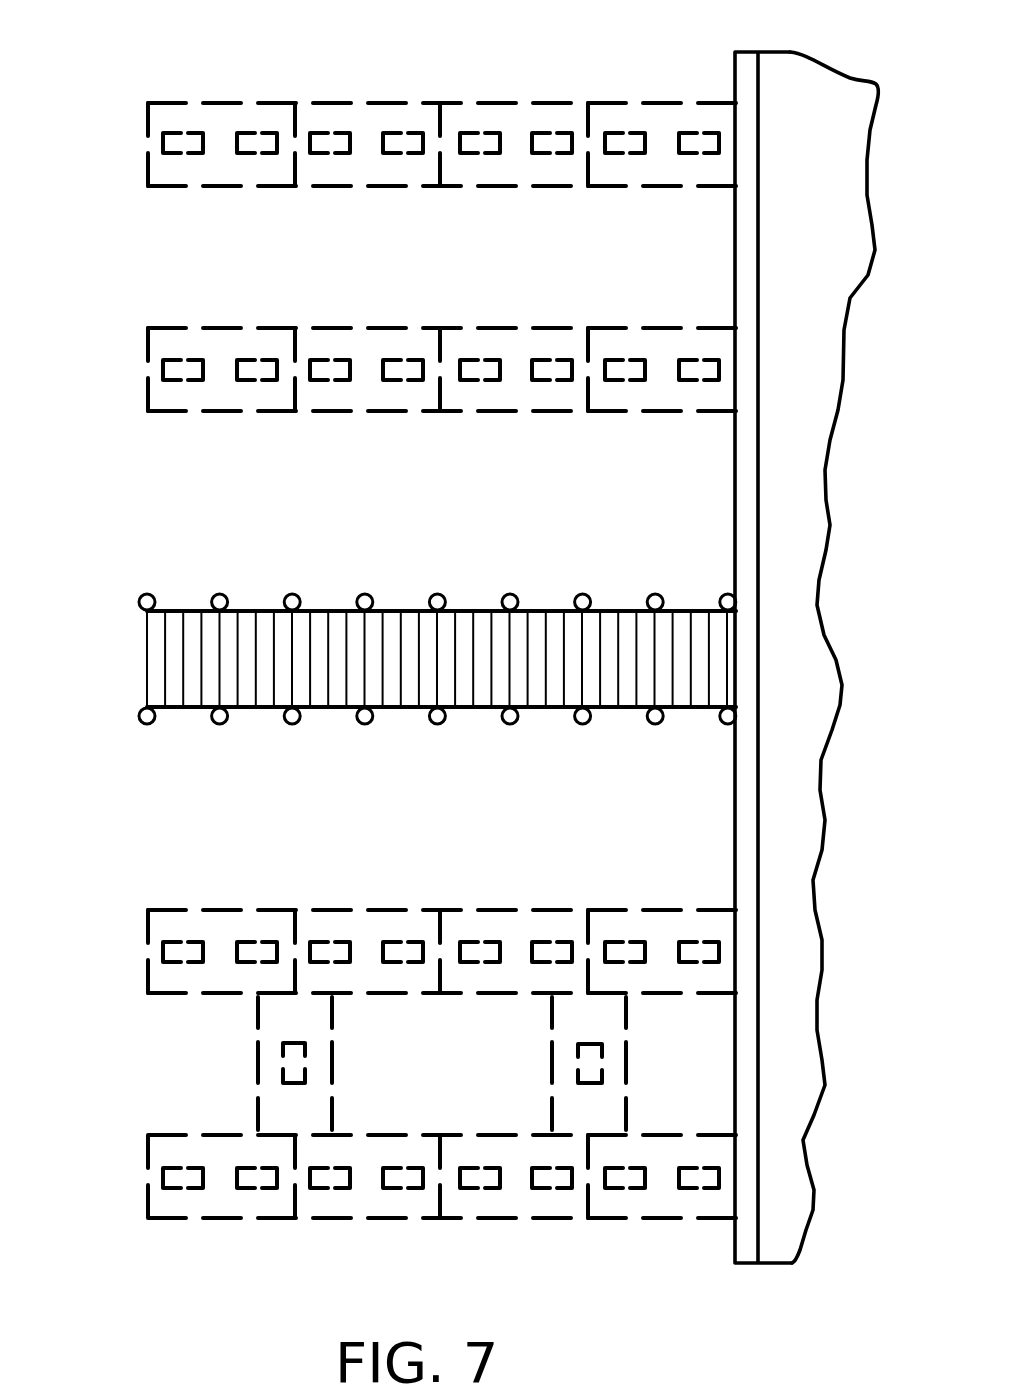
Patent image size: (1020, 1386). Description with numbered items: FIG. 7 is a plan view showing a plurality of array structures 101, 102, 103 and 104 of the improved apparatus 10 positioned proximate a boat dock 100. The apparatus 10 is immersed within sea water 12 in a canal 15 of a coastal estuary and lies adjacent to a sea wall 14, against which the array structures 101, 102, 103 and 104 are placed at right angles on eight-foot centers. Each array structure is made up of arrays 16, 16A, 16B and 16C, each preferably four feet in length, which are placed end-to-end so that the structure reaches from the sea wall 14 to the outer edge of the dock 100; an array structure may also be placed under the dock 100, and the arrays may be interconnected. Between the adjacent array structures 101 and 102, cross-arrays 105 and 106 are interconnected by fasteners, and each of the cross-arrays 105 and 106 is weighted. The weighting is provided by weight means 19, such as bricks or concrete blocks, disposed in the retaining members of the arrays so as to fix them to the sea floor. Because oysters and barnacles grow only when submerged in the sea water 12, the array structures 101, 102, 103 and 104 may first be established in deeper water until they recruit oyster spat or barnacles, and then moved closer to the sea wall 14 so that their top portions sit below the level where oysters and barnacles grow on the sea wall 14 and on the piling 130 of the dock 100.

The improved apparatus 10 is at (525, 60).
The sea water 12 is at (334, 250).
The sea wall 14 is at (748, 134).
The canal 15 is at (150, 264).
The array 16 is at (657, 1222).
The array 16A is at (497, 1222).
The array 16B is at (372, 1222).
The array 16C is at (205, 1222).
The weight means 19 is at (174, 147).
The boat dock 100 is at (147, 660).
The array structure 101 is at (148, 1192).
The array structure 102 is at (148, 965).
The array structure 103 is at (148, 390).
The array structure 104 is at (148, 158).
The cross-array 105 is at (548, 1068).
The cross-array 106 is at (335, 1070).
The piling 130 is at (291, 596).